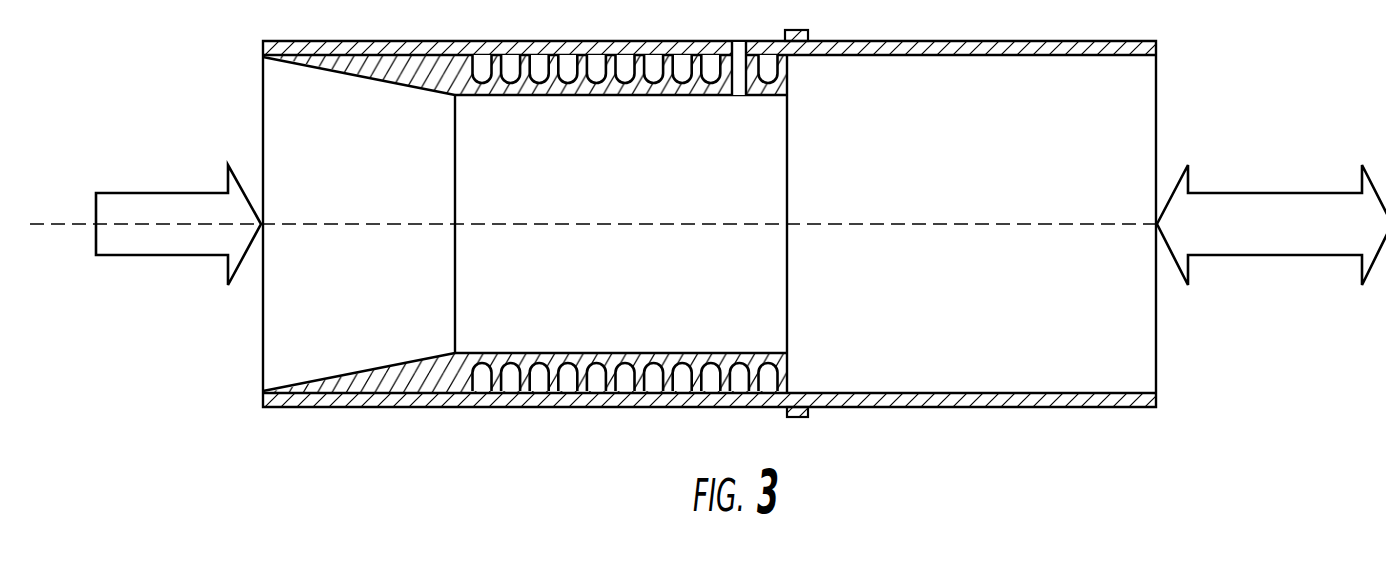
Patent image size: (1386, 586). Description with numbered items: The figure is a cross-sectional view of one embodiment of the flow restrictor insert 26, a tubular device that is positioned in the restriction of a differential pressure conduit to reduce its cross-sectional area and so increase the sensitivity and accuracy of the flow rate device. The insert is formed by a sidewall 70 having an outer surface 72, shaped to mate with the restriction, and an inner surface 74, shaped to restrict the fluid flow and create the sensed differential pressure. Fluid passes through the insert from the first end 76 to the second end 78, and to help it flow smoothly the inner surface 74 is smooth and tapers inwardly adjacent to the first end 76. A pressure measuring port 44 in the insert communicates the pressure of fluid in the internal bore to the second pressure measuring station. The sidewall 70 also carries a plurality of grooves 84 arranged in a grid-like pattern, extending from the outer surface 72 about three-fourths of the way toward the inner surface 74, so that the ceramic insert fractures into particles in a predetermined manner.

The flow restrictor insert 26 is at (314, 72).
The pressure measuring port 44 is at (737, 96).
The sidewall 70 is at (523, 94).
The outer surface 72 is at (555, 383).
The inner surface 74 is at (652, 353).
The first end 76 is at (303, 384).
The second end 78 is at (786, 78).
The grooves 84 is at (627, 383).